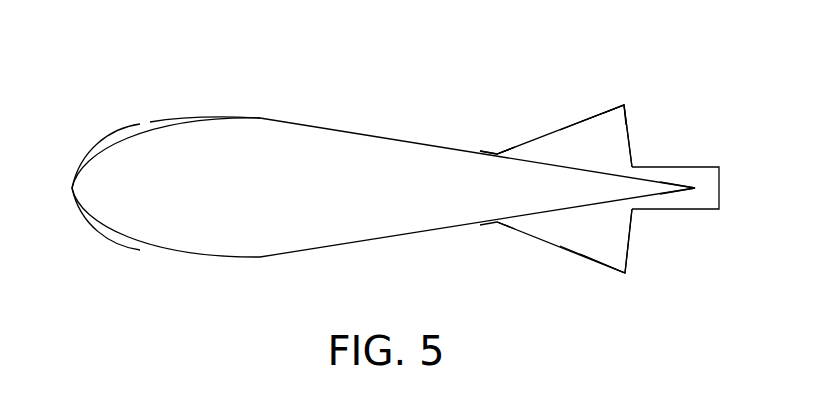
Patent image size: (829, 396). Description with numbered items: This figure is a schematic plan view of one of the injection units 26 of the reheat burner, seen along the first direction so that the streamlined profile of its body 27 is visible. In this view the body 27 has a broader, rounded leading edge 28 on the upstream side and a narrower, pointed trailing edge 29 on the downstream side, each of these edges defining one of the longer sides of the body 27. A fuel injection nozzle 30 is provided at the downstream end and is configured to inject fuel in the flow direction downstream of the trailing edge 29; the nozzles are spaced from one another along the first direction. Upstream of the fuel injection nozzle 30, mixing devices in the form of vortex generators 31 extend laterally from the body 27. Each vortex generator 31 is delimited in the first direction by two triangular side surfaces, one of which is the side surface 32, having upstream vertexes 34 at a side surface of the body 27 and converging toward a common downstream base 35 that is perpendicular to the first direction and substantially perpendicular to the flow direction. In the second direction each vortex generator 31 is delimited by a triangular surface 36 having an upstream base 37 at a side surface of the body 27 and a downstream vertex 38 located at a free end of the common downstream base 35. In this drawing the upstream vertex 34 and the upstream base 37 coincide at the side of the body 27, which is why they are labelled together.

The injection unit 26 is at (205, 270).
The body 27 is at (198, 138).
The leading edge 28 is at (72, 188).
The trailing edge 29 is at (695, 188).
The fuel injection nozzle 30 is at (703, 172).
The vortex generator 31 is at (542, 130).
The triangular side surface 32 is at (582, 132).
The upstream vertex 34 is at (495, 153).
The common downstream base 35 is at (633, 135).
The triangular surface 36 is at (598, 113).
The upstream base 37 is at (495, 153).
The downstream vertex 38 is at (628, 107).